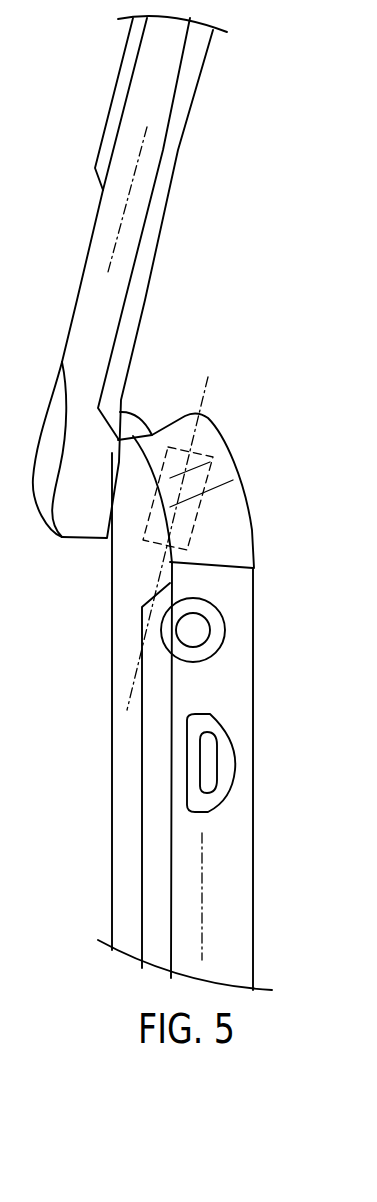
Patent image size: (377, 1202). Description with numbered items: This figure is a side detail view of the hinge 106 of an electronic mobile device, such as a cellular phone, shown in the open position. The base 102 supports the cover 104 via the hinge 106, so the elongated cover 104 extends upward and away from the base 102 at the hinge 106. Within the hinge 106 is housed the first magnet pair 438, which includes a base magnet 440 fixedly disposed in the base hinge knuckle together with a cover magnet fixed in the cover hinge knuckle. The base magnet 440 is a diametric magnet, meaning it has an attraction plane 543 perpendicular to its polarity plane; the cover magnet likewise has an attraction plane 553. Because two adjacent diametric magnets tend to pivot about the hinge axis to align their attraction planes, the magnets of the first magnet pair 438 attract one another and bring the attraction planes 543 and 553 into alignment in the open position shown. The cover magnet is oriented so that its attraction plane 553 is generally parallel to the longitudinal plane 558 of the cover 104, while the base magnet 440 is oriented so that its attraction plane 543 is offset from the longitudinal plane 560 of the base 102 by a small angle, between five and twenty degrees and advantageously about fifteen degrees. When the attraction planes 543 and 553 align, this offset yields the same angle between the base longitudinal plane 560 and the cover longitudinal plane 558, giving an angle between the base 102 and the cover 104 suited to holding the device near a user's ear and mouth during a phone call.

The base 102 is at (240, 692).
The cover 104 is at (160, 205).
The hinge 106 is at (175, 369).
The first magnet pair 438 is at (207, 446).
The base magnet 440 is at (200, 511).
The attraction plane 543 is at (123, 543).
The attraction plane 553 is at (160, 582).
The longitudinal plane 558 is at (140, 165).
The longitudinal plane 560 is at (202, 857).